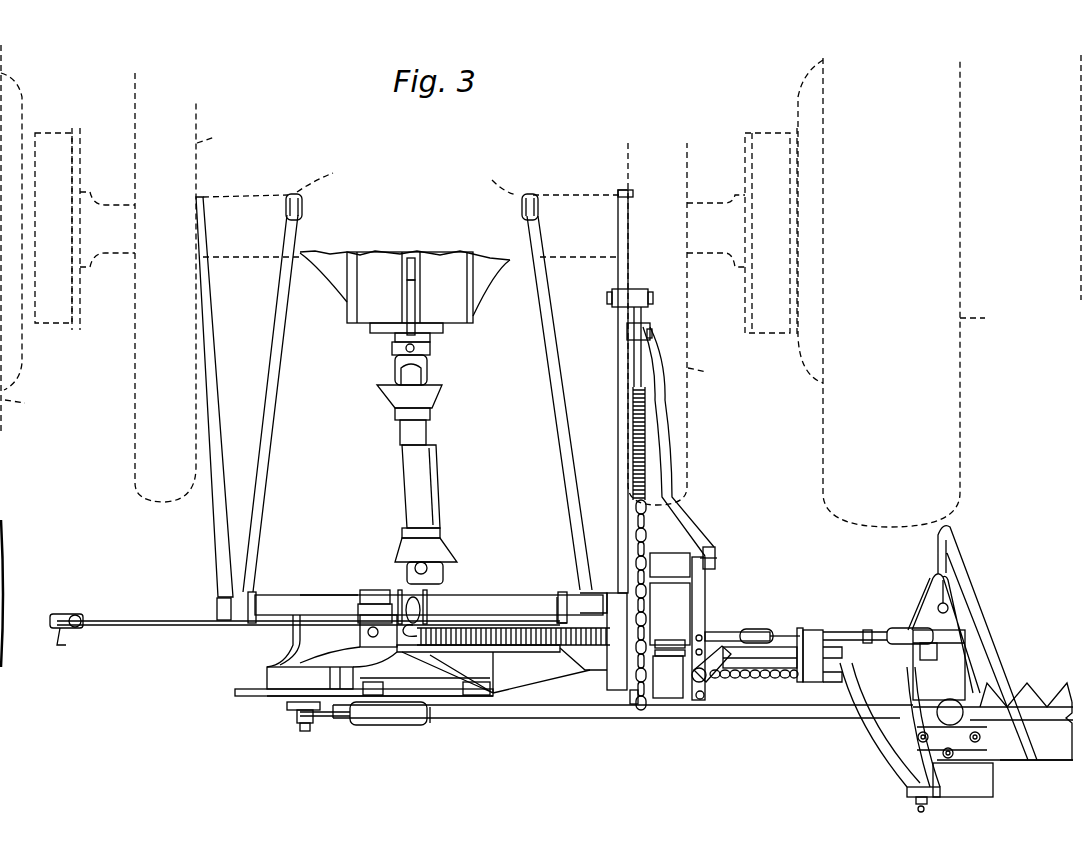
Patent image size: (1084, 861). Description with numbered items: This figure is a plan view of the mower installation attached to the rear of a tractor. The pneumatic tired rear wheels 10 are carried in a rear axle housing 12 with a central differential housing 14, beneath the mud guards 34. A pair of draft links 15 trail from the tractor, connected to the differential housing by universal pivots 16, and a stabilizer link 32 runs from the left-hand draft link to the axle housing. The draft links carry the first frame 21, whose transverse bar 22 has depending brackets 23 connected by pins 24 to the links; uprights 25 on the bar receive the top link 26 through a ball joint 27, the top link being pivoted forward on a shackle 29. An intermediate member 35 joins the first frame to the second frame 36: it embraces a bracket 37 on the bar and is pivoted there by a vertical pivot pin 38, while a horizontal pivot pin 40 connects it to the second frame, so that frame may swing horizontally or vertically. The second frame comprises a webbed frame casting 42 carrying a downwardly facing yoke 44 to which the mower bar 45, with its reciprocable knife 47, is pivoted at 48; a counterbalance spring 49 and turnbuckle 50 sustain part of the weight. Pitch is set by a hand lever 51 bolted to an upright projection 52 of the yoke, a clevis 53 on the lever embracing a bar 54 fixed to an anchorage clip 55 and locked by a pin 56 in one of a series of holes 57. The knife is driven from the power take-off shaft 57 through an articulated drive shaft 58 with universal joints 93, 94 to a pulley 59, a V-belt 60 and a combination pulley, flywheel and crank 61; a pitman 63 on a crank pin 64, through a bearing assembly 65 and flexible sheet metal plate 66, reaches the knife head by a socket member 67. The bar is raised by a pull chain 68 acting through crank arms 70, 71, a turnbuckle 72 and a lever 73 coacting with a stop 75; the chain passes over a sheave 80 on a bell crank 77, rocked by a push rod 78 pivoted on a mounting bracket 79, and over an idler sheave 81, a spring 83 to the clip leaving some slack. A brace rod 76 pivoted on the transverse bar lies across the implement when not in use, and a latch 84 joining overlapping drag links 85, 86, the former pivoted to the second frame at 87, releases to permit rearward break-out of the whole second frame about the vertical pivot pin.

The rear wheels 10 is at (541, 286).
The rear axle housing 12 is at (237, 196).
The central differential housing 14 is at (478, 285).
The draft links 15 is at (278, 410).
The universal pivots 16 is at (524, 195).
The first frame 21 is at (326, 588).
The transverse bar 22 is at (280, 588).
The depending brackets 23 is at (254, 592).
The pins 24 is at (217, 605).
The uprights 25 is at (430, 595).
The top link 26 is at (405, 318).
The ball joint 27 is at (428, 614).
The shackle 29 is at (405, 283).
The stabilizer link 32 is at (213, 396).
The mud guards 34 is at (433, 289).
The intermediate member 35 is at (335, 643).
The second frame 36 is at (555, 698).
The bracket 37 is at (360, 604).
The vertical pivot pin 38 is at (378, 639).
The horizontal pivot pin 40 is at (378, 590).
The frame casting 42 is at (517, 697).
The yoke 44 is at (882, 733).
The mower bar 45 is at (1043, 771).
The knife 47 is at (1030, 690).
The pivot 48 is at (913, 813).
The counterbalance spring 49 is at (515, 647).
The turnbuckle 50 is at (778, 629).
The hand lever 51 is at (760, 678).
The upright projection 52 is at (798, 630).
The clevis 53 is at (724, 646).
The bar 54 is at (705, 600).
The anchorage clip 55 is at (647, 327).
The pin 56 is at (730, 670).
The power take-off shaft 57 is at (392, 346).
The drive shaft 58 is at (400, 462).
The pulley 59 is at (500, 710).
The V-belt 60 is at (267, 683).
The combination pulley, flywheel and crank 61 is at (280, 697).
The pitman 63 is at (432, 725).
The crank pin 64 is at (290, 710).
The bearing assembly 65 is at (298, 720).
The sheet metal plate 66 is at (345, 718).
The socket member 67 is at (953, 694).
The pull chain 68 is at (634, 545).
The crank arm 70 is at (828, 682).
The crank arm 71 is at (813, 630).
The turnbuckle 72 is at (845, 632).
The lever 73 is at (935, 612).
The stop 75 is at (898, 628).
The brace rod 76 is at (152, 630).
The bell crank 77 is at (612, 668).
The push rod 78 is at (628, 478).
The mounting bracket 79 is at (630, 252).
The sheave 80 is at (632, 705).
The idler sheave 81 is at (668, 678).
The spring 83 is at (632, 400).
The latch 84 is at (714, 560).
The drag link 85 is at (670, 599).
The drag link 86 is at (665, 530).
The pivot 87 is at (668, 638).
The universal joint 93 is at (447, 574).
The universal joint 94 is at (427, 366).